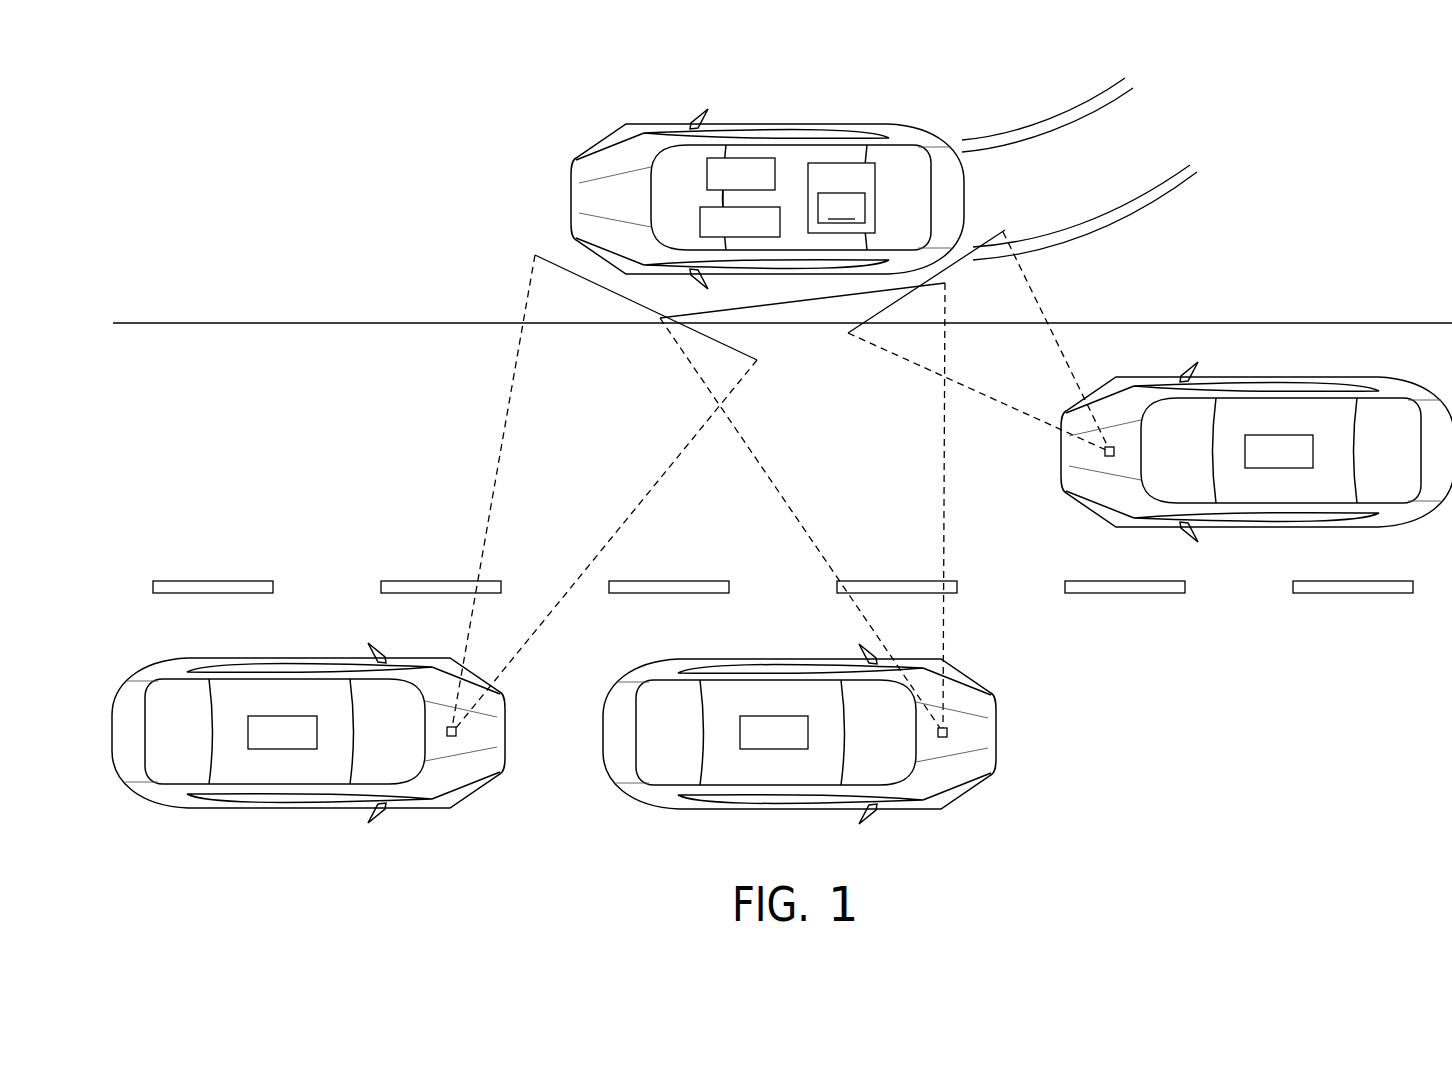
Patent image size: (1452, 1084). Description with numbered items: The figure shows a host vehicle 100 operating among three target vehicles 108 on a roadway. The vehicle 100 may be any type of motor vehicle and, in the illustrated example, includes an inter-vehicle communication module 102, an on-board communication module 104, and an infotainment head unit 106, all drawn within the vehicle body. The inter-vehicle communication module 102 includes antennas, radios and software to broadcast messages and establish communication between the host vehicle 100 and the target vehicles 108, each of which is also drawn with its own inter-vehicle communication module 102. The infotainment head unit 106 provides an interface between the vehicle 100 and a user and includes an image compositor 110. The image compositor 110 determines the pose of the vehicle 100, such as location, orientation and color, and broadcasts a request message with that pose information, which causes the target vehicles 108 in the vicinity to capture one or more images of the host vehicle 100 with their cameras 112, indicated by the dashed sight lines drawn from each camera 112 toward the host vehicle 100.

The vehicle 100 is at (933, 128).
The inter-vehicle communication module 102 is at (743, 158).
The on-board communication module 104 is at (740, 237).
The infotainment head unit 106 is at (919, 198).
The target vehicles 108 is at (504, 708).
The image compositor 110 is at (878, 197).
The camera 112 is at (457, 733).